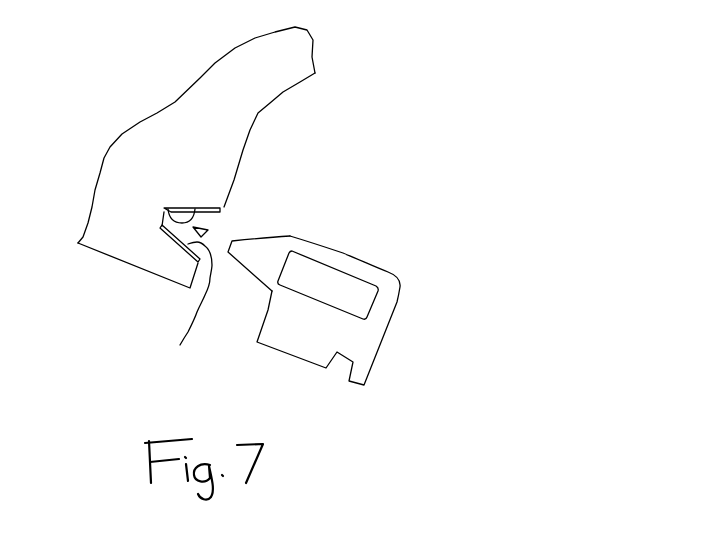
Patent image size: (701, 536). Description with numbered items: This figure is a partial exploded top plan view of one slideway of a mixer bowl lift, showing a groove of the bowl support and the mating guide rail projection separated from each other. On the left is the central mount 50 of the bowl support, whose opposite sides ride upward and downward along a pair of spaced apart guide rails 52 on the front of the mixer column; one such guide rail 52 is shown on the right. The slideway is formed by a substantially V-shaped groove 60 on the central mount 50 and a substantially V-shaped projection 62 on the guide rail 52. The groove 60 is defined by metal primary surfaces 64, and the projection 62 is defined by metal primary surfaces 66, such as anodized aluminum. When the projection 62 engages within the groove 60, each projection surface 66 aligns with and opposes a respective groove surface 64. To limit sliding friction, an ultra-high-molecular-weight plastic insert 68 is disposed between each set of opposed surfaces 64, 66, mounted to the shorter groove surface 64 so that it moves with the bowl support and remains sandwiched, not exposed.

The central mount 50 is at (110, 227).
The guide rail 52 is at (367, 342).
The groove 60 is at (208, 230).
The projection 62 is at (258, 257).
The primary surfaces 64 is at (197, 208).
The primary surfaces 66 is at (262, 245).
The ultra-high-molecular-weight plastic insert 68 is at (168, 209).